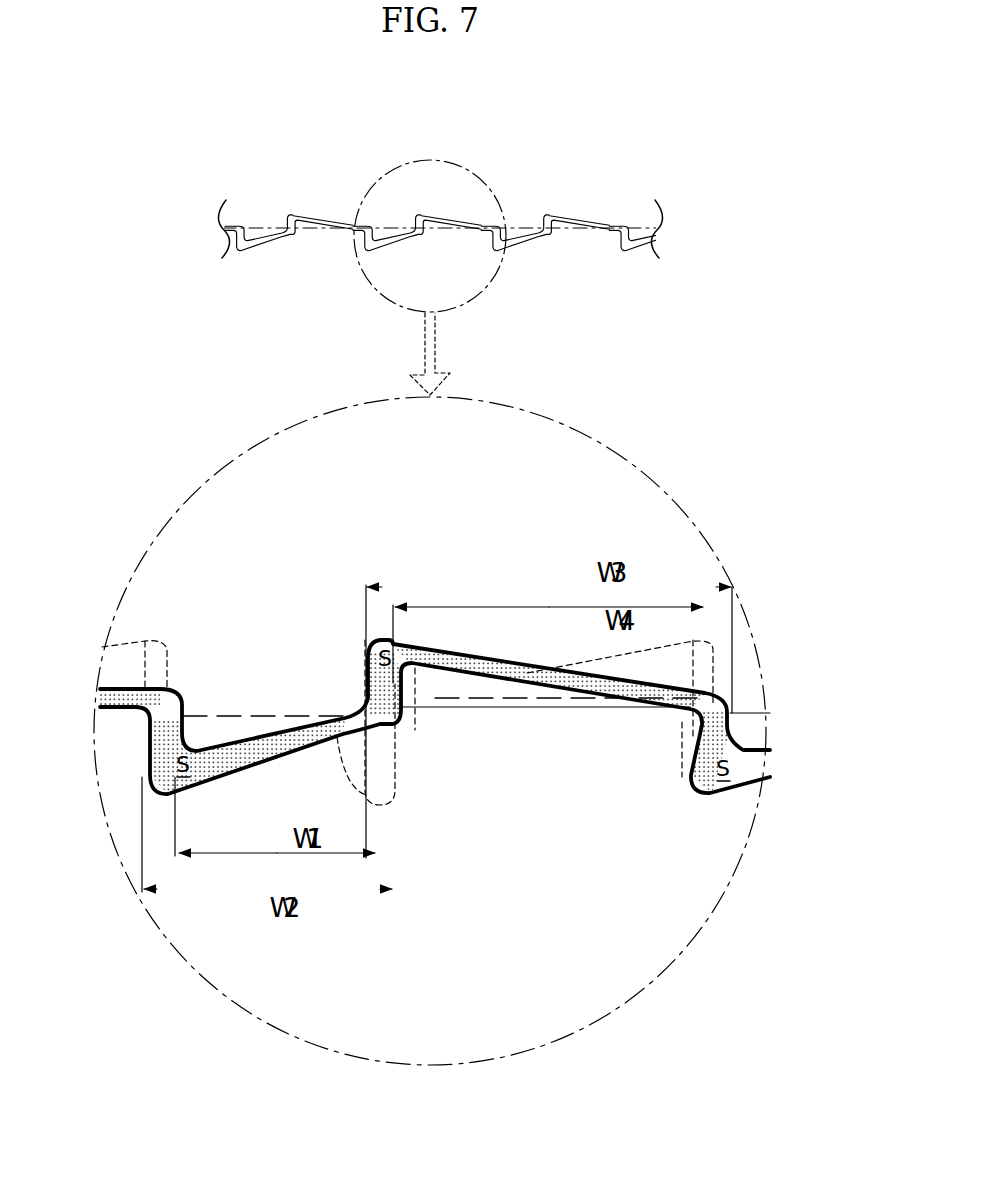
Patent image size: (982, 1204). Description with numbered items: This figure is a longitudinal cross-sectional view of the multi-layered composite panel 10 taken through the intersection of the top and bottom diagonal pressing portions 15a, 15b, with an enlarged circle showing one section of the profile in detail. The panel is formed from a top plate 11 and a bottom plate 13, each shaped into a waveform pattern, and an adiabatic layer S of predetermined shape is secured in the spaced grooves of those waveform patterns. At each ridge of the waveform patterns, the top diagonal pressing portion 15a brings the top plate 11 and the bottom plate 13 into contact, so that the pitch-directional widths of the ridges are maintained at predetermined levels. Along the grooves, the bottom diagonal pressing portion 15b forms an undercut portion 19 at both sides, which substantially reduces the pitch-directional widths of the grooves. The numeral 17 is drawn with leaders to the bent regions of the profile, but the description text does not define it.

The multi-layered composite panel 10 is at (590, 170).
The top plate 11 is at (428, 648).
The bottom plate 13 is at (493, 682).
The top diagonal pressing portion 15a is at (550, 710).
The bottom diagonal pressing portion 15b is at (252, 710).
The bent portion 17 is at (590, 658).
The undercut portion 19 is at (187, 735).